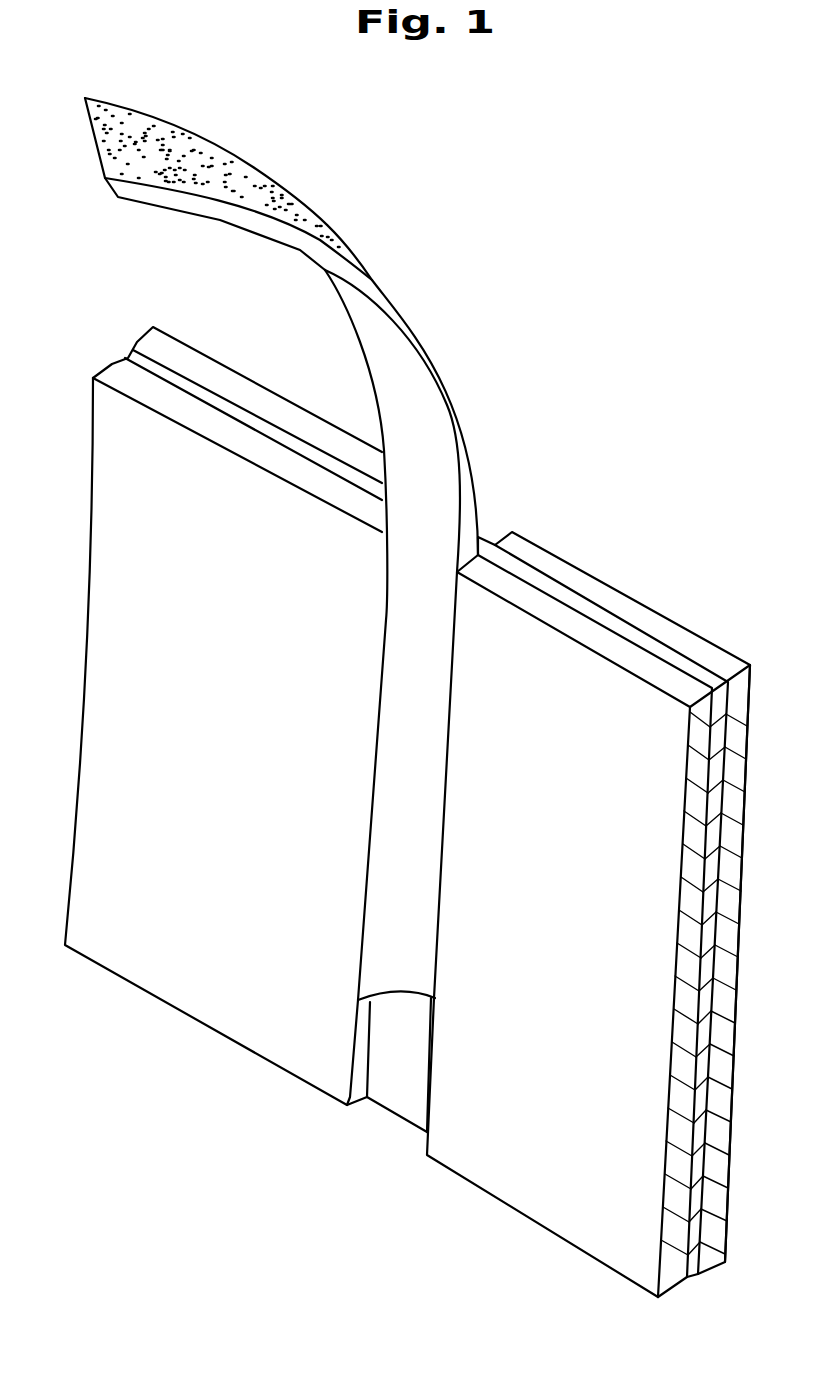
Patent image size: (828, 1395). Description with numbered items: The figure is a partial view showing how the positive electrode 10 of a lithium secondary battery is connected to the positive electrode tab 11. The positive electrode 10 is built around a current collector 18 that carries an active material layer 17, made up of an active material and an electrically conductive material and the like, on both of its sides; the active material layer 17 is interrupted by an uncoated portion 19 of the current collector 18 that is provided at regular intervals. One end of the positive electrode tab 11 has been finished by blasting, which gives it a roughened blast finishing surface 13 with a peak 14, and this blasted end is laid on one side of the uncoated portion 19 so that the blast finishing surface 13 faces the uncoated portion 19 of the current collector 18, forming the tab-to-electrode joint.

The positive electrode 10 is at (588, 886).
The positive electrode tab 11 is at (252, 167).
The blast finishing surface 13 is at (157, 143).
The peak 14 is at (377, 343).
The active material layer 17 is at (527, 602).
The current collector 18 is at (582, 608).
The uncoated portion 19 is at (479, 538).